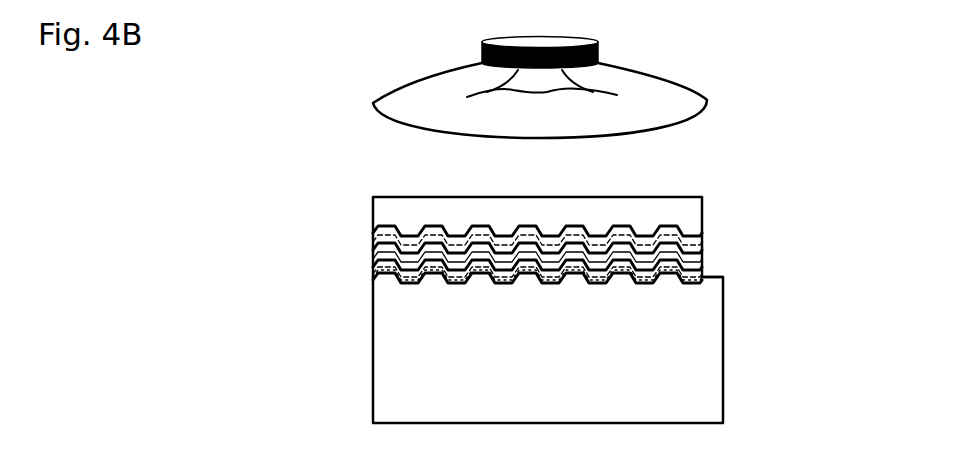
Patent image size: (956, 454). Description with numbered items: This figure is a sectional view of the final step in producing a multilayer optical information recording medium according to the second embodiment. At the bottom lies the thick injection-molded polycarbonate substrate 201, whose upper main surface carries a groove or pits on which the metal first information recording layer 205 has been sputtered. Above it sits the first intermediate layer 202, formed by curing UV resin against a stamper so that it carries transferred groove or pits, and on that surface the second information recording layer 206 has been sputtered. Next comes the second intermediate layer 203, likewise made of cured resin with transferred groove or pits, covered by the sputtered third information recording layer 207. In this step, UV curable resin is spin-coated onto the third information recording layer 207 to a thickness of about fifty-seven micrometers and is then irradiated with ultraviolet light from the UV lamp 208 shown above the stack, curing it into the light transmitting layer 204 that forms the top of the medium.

The substrate 201 is at (690, 373).
The first intermediate layer 202 is at (372, 263).
The second intermediate layer 203 is at (372, 244).
The light transmitting layer 204 is at (387, 207).
The first information recording layer 205 is at (687, 280).
The second information recording layer 206 is at (703, 255).
The third information recording layer 207 is at (688, 231).
The UV lamp 208 is at (627, 80).